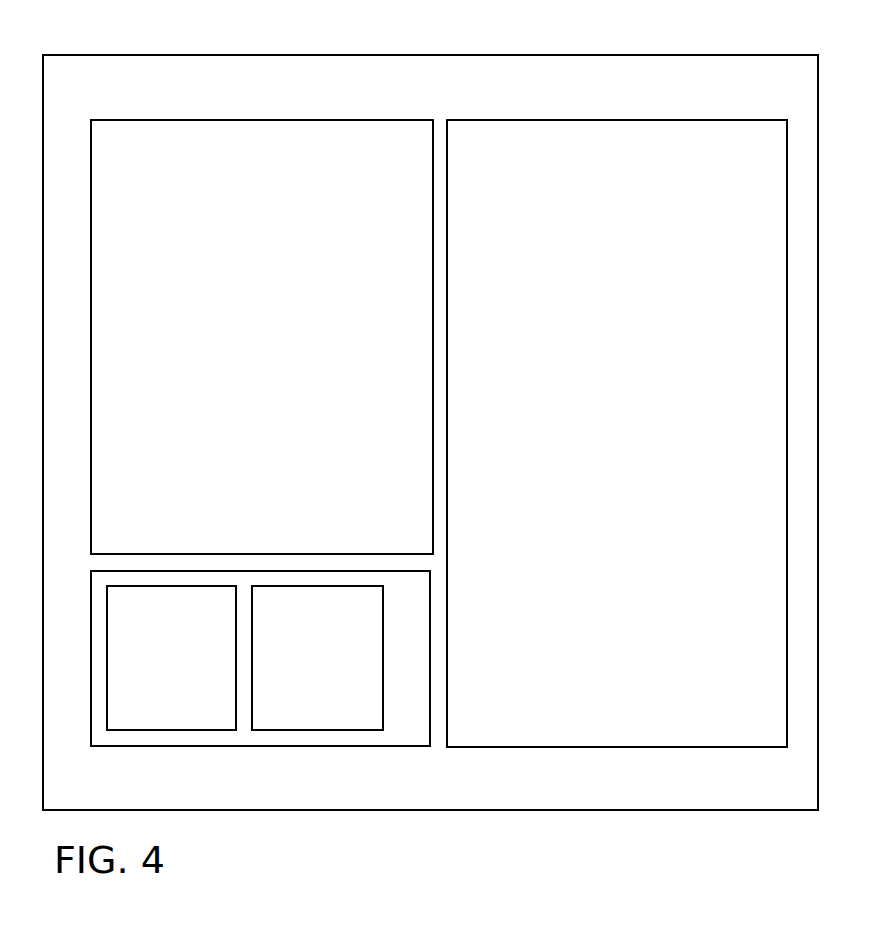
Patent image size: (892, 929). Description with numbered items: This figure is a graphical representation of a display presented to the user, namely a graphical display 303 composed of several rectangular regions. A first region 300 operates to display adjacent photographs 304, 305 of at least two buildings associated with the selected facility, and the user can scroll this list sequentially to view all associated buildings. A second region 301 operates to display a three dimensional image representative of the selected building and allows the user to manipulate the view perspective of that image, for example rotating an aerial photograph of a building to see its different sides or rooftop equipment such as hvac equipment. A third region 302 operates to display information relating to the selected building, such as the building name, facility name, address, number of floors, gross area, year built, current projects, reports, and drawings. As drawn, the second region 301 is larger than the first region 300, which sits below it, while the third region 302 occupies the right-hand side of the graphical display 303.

The first region 300 is at (398, 729).
The second region 301 is at (222, 152).
The third region 302 is at (627, 168).
The graphical display 303 is at (385, 103).
The photograph 304 is at (152, 714).
The photograph 305 is at (267, 714).